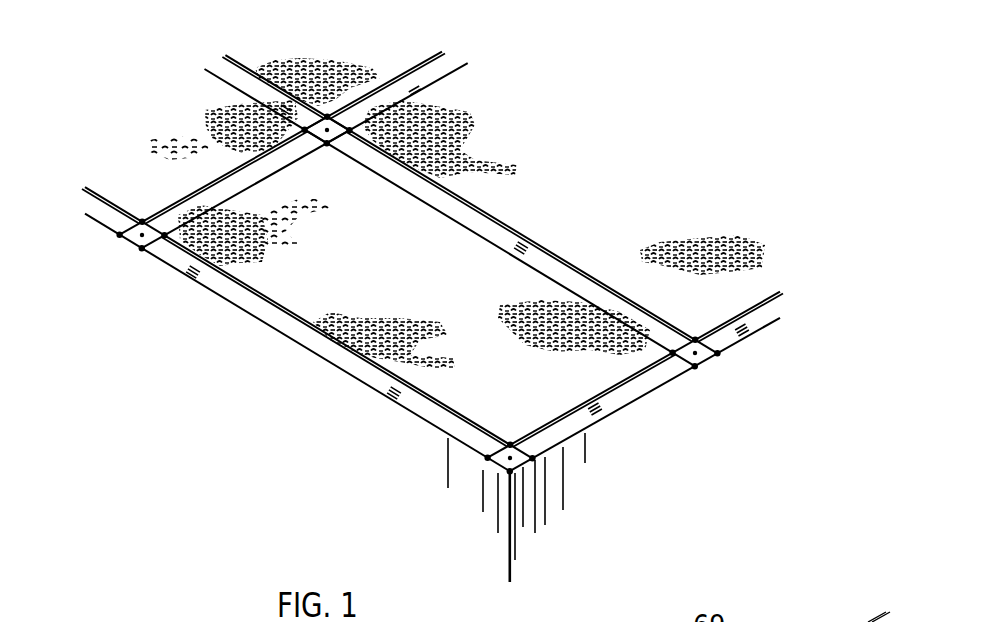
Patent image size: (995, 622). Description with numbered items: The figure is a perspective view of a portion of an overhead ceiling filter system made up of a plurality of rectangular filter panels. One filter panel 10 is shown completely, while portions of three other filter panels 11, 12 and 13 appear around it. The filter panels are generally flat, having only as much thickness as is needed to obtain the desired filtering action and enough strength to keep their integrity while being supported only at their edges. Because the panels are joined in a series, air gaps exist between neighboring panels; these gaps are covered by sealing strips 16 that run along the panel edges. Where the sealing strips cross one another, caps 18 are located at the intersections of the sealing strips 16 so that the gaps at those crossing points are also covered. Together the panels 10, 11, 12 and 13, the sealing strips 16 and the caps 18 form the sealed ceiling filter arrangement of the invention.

The filter panel 10 is at (424, 298).
The filter panel 11 is at (183, 110).
The filter panel 12 is at (349, 49).
The filter panel 13 is at (659, 194).
The sealing strip 16 is at (480, 216).
The cap 18 is at (336, 141).